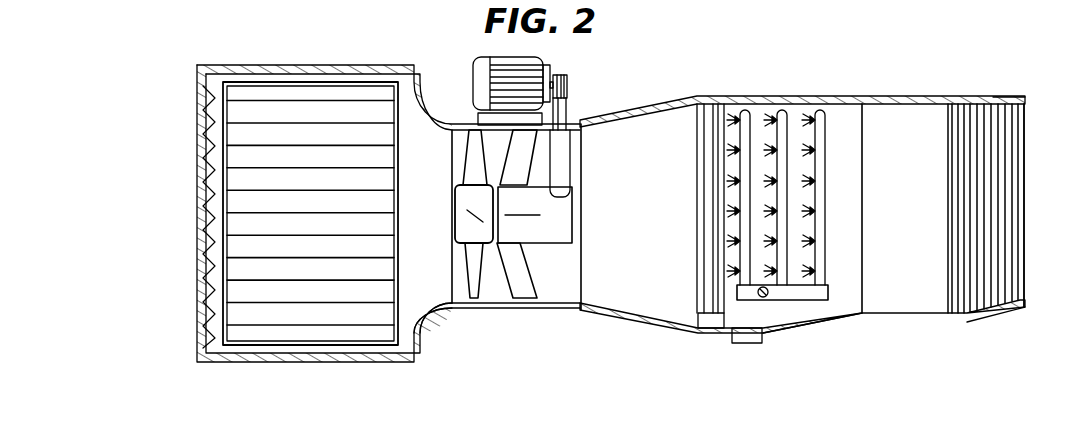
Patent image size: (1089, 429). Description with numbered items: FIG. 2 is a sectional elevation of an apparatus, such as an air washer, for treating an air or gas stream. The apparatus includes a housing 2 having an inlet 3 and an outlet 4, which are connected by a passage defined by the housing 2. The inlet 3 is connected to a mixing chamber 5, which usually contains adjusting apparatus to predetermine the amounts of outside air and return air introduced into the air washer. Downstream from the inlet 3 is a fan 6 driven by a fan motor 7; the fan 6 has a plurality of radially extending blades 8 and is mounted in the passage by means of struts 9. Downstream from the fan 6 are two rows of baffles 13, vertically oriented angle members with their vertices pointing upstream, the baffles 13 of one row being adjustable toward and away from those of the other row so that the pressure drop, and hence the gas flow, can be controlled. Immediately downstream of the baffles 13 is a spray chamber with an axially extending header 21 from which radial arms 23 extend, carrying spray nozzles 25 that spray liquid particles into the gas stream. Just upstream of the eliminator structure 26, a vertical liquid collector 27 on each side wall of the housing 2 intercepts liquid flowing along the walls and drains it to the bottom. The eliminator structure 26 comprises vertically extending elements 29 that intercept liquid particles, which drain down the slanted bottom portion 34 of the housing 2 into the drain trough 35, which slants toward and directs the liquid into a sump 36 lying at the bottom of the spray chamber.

The housing 2 is at (642, 108).
The inlet 3 is at (440, 312).
The outlet 4 is at (1028, 150).
The mixing chamber 5 is at (235, 182).
The fan 6 is at (466, 217).
The fan motor 7 is at (482, 68).
The blades 8 is at (470, 157).
The struts 9 is at (520, 265).
The baffles 13 is at (716, 162).
The header 21 is at (803, 292).
The radial arms 23 is at (818, 183).
The spray nozzles 25 is at (818, 153).
The eliminator structure 26 is at (991, 90).
The vertical liquid collector 27 is at (958, 147).
The eliminator elements 29 is at (1008, 203).
The slanted bottom portion 34 is at (995, 313).
The drain trough 35 is at (782, 335).
The sump 36 is at (742, 338).